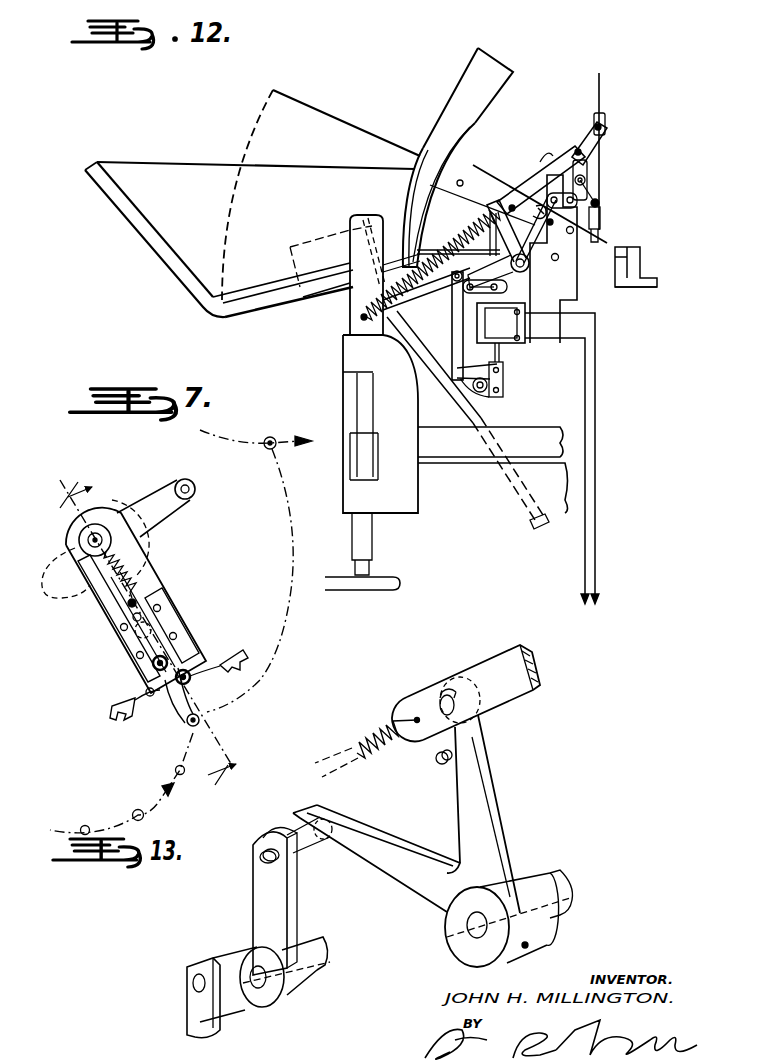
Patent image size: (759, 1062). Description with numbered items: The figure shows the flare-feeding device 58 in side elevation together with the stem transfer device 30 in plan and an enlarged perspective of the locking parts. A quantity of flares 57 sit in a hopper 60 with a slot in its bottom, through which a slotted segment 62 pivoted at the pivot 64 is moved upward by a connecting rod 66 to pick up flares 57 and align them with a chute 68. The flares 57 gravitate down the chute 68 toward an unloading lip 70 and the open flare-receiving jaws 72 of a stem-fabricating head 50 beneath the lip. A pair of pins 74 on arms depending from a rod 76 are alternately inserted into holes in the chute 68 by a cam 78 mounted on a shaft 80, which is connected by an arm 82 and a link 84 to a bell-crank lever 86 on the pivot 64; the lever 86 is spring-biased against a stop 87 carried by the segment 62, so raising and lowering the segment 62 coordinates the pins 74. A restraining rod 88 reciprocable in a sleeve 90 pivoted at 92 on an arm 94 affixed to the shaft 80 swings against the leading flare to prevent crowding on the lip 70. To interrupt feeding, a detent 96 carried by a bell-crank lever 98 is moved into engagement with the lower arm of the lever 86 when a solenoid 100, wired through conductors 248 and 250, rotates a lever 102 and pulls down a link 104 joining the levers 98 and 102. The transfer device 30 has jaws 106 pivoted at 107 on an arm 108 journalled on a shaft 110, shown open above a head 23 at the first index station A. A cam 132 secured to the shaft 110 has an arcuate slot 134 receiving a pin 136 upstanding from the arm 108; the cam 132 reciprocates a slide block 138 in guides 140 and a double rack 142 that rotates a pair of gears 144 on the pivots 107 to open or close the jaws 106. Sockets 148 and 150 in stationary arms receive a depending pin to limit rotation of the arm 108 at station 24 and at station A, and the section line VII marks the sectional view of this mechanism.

In FIG. 12, the hopper 60 is at (158, 173).
In FIG. 12, the slotted segment 62 is at (265, 117).
In FIG. 12, the flare-feeding device 58 is at (410, 135).
In FIG. 12, the chute 68 is at (466, 158).
In FIG. 12, the flares 57 is at (504, 181).
In FIG. 12, the link 104 is at (406, 354).
In FIG. 13, the link 104 is at (190, 1000).
In FIG. 12, the connecting rod 66 is at (530, 521).
In FIG. 12, the solenoid 100 is at (505, 368).
In FIG. 12, the lever 102 is at (471, 392).
In FIG. 12, the bell-crank lever 98 is at (456, 312).
In FIG. 13, the bell-crank lever 98 is at (277, 903).
In FIG. 12, the detent 96 is at (500, 290).
In FIG. 13, the detent 96 is at (307, 850).
In FIG. 12, the pivot 64 is at (530, 266).
In FIG. 13, the pivot 64 is at (472, 926).
In FIG. 12, the bell-crank lever 86 is at (470, 229).
In FIG. 13, the bell-crank lever 86 is at (480, 790).
In FIG. 12, the stop 87 is at (486, 220).
In FIG. 13, the stop 87 is at (437, 766).
In FIG. 12, the cam 78 is at (546, 157).
In FIG. 12, the link 84 is at (574, 150).
In FIG. 13, the link 84 is at (510, 692).
In FIG. 12, the restraining rod 88 is at (603, 92).
In FIG. 12, the sleeve 90 is at (606, 122).
In FIG. 12, the arm 82 is at (587, 165).
In FIG. 12, the shaft 80 is at (588, 178).
In FIG. 12, the arm 94 is at (596, 196).
In FIG. 12, the pivot 92 is at (601, 212).
In FIG. 12, the rod 76 is at (588, 198).
In FIG. 12, the pins 74 is at (580, 215).
In FIG. 12, the unloading lip 70 is at (641, 252).
In FIG. 12, the flare-receiving jaws 72 is at (655, 288).
In FIG. 12, the conductor 250 is at (597, 536).
In FIG. 12, the conductor 248 is at (583, 553).
In FIG. 7, the stem-fabricating head 50 is at (275, 437).
In FIG. 7, the station 24 is at (250, 580).
In FIG. 7, the shaft 110 is at (80, 533).
In FIG. 7, the arm 108 is at (148, 581).
In FIG. 7, the arcuate slot 134 is at (137, 503).
In FIG. 7, the socket 148 is at (196, 490).
In FIG. 7, the pin 136 is at (150, 560).
In FIG. 7, the cam 132 is at (103, 570).
In FIG. 7, the slide block 138 is at (165, 610).
In FIG. 7, the guides 140 is at (180, 630).
In FIG. 7, the first transfer device 30 is at (93, 610).
In FIG. 7, the socket 150 is at (118, 637).
In FIG. 7, the gears 144 is at (178, 665).
In FIG. 7, the jaws 106 is at (232, 654).
In FIG. 7, the pivot 107 is at (215, 670).
In FIG. 7, the double rack 142 is at (215, 692).
In FIG. 7, the first index station A is at (205, 718).
In FIG. 7, the head 23 is at (199, 723).
In FIG. 7, the section line VII- VII is at (162, 620).